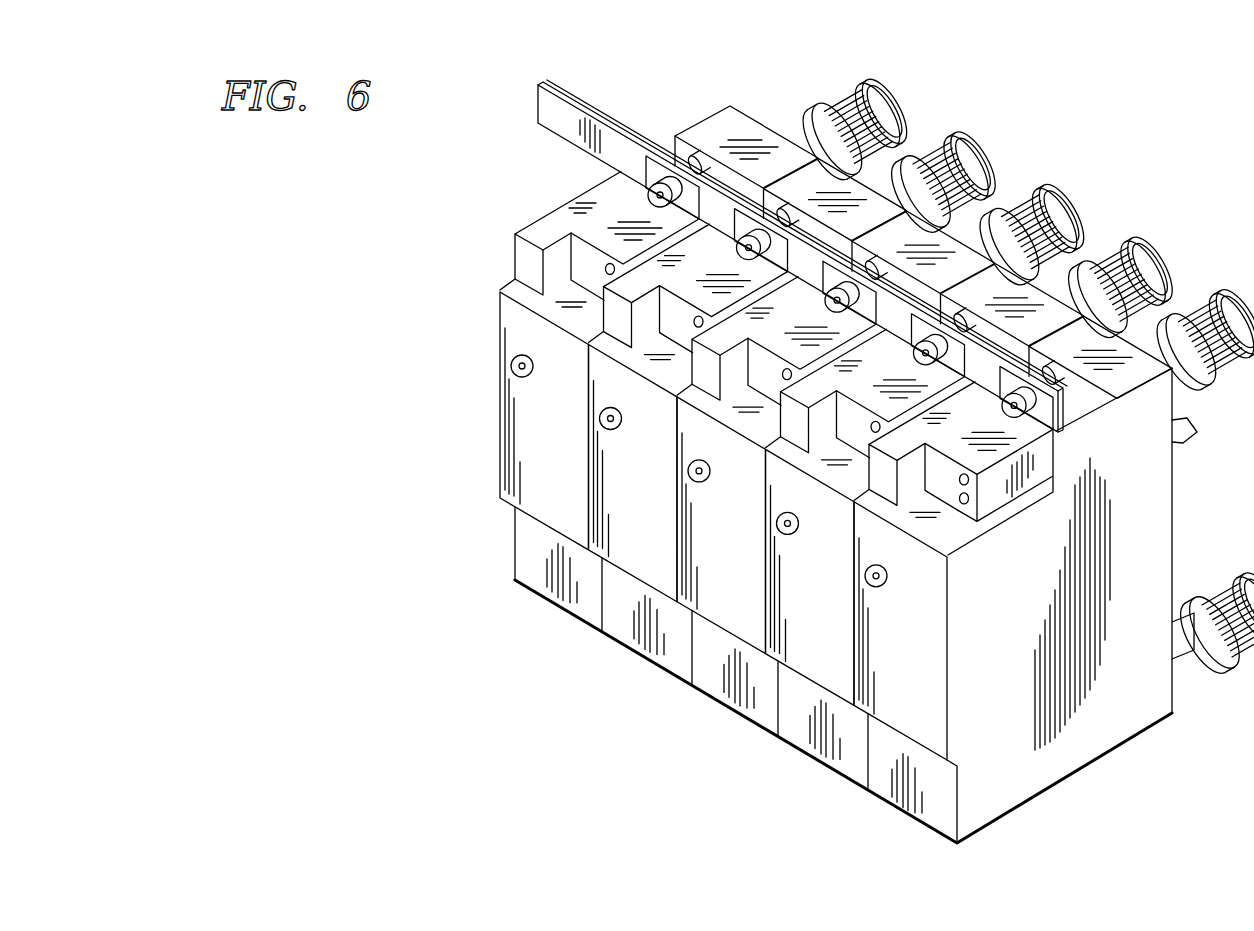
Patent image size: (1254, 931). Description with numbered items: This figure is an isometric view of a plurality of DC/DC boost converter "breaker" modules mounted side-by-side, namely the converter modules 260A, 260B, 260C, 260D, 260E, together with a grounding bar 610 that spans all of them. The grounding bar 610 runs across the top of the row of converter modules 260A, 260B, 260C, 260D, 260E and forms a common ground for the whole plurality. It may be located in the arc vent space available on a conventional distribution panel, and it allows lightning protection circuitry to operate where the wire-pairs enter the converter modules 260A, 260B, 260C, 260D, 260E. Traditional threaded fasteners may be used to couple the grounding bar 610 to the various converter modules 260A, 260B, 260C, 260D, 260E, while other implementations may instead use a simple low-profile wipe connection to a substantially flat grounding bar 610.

The grounding bar 610 is at (604, 100).
The converter module 260A is at (562, 608).
The converter module 260B is at (660, 666).
The converter module 260C is at (743, 723).
The converter module 260D is at (827, 777).
The converter module 260E is at (917, 823).